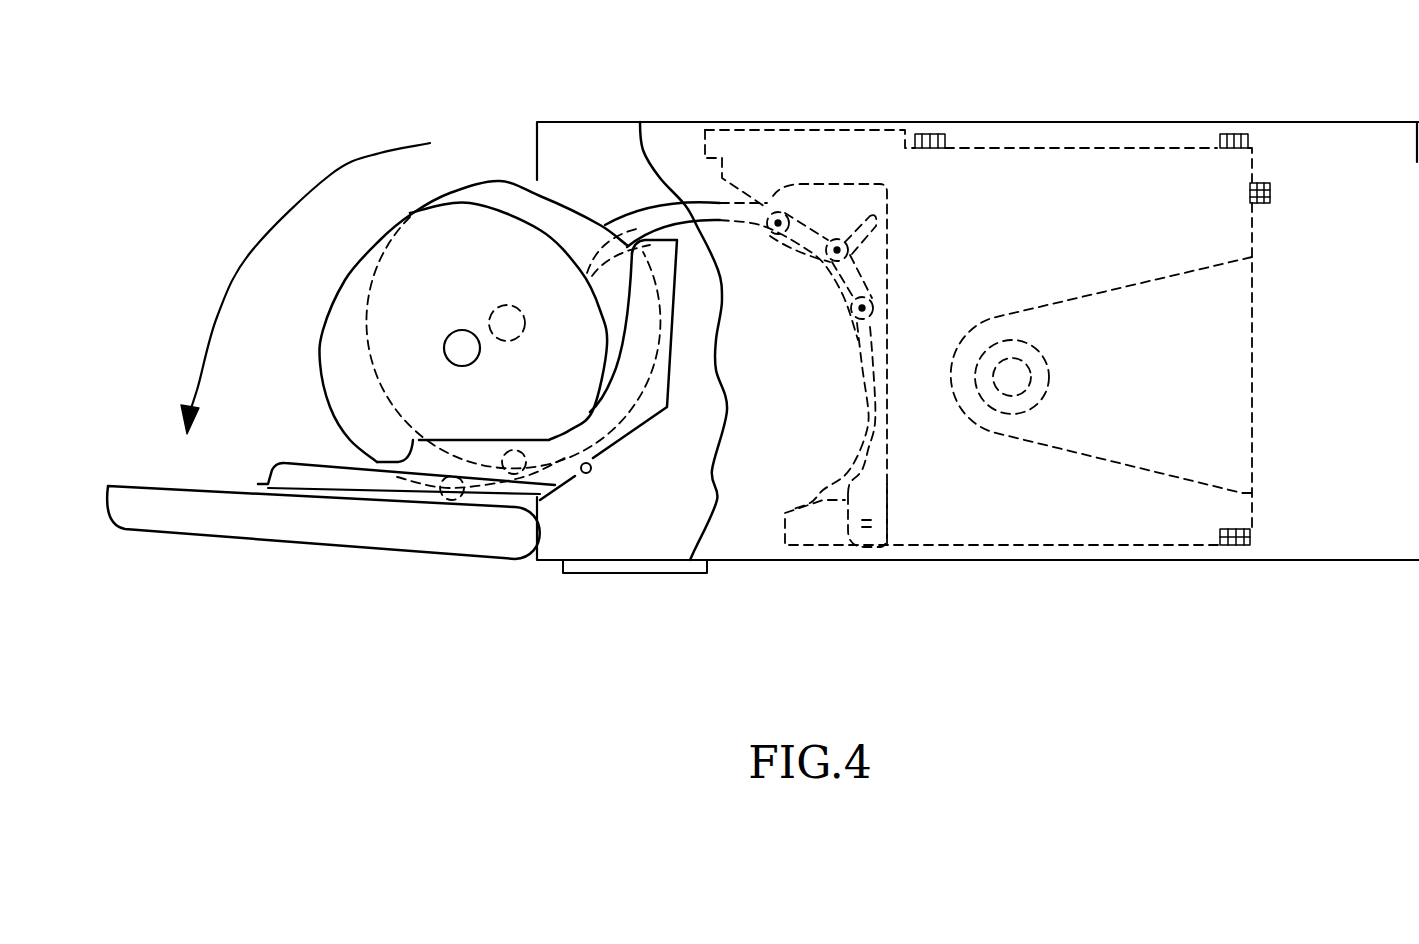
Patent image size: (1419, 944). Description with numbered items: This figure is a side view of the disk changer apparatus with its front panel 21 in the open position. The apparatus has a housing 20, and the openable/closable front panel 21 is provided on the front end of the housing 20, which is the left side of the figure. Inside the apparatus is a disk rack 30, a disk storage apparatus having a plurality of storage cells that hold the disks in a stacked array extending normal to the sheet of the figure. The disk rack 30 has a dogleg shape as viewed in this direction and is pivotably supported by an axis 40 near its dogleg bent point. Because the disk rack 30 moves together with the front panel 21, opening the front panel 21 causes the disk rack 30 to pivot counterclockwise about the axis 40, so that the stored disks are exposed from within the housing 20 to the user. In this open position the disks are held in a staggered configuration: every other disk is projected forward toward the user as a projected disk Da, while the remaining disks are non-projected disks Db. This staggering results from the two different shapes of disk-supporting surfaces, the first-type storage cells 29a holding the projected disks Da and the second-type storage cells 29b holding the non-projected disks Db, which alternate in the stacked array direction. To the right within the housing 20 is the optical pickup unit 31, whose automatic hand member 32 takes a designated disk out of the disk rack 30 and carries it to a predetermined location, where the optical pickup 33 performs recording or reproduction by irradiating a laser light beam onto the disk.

The housing 20 is at (978, 122).
The front panel 21 is at (273, 528).
The first-type storage cell 29a is at (455, 500).
The second-type storage cell 29b is at (516, 475).
The disk rack 30 is at (324, 450).
The optical pickup unit 31 is at (967, 590).
The automatic hand member 32 is at (878, 553).
The optical pickup 33 is at (1018, 413).
The axis 40 is at (592, 475).
The projected disk Da is at (322, 333).
The non-projected disk Db is at (495, 180).